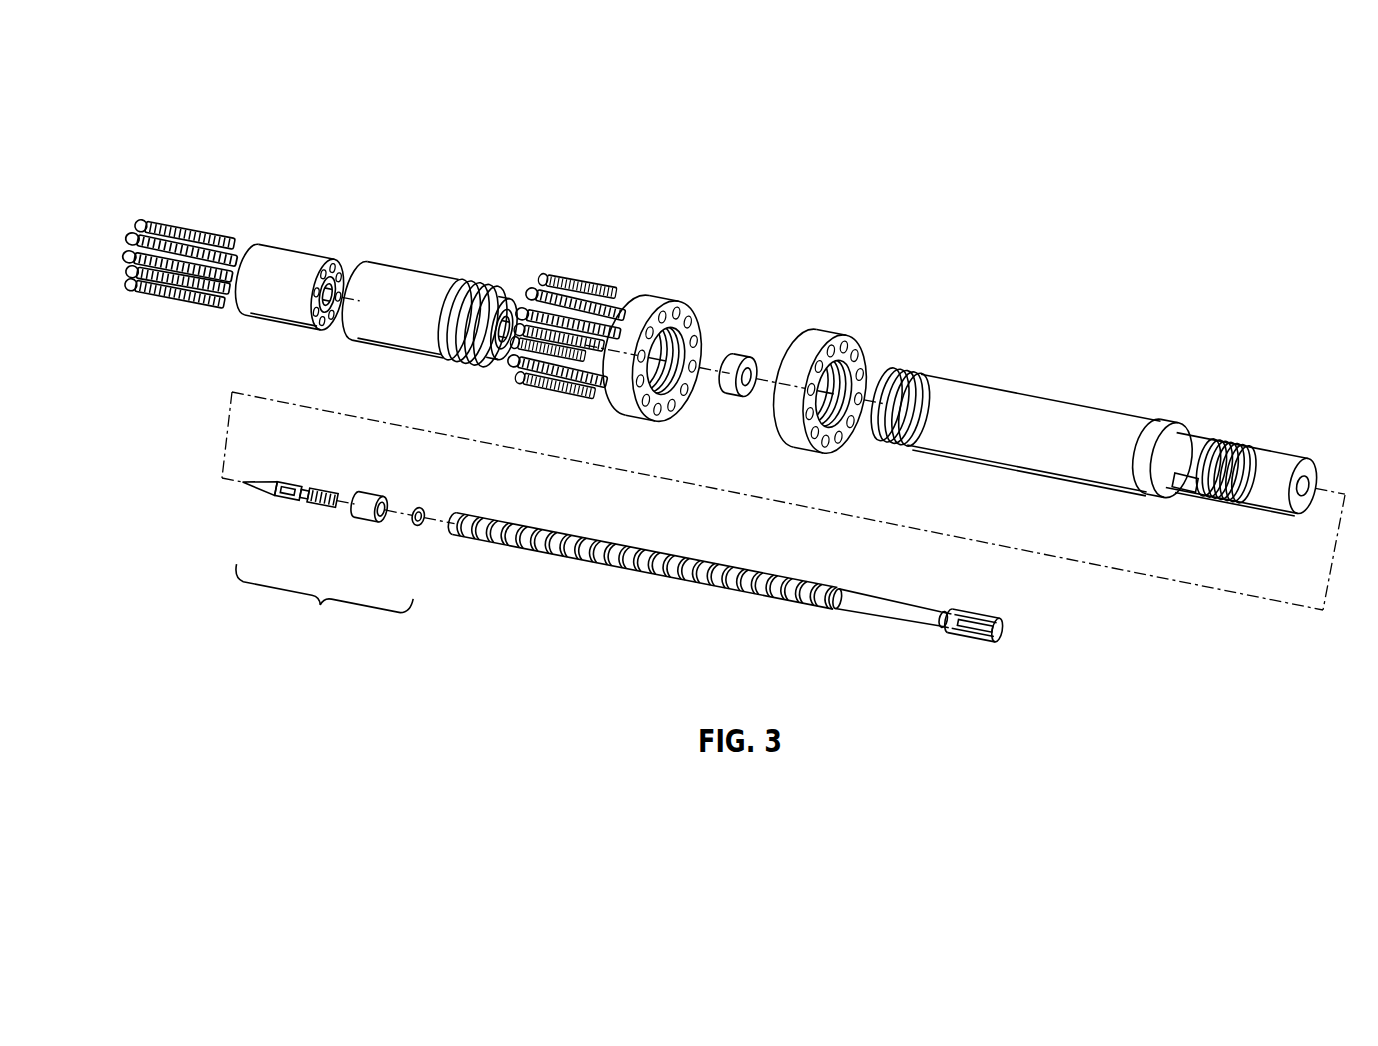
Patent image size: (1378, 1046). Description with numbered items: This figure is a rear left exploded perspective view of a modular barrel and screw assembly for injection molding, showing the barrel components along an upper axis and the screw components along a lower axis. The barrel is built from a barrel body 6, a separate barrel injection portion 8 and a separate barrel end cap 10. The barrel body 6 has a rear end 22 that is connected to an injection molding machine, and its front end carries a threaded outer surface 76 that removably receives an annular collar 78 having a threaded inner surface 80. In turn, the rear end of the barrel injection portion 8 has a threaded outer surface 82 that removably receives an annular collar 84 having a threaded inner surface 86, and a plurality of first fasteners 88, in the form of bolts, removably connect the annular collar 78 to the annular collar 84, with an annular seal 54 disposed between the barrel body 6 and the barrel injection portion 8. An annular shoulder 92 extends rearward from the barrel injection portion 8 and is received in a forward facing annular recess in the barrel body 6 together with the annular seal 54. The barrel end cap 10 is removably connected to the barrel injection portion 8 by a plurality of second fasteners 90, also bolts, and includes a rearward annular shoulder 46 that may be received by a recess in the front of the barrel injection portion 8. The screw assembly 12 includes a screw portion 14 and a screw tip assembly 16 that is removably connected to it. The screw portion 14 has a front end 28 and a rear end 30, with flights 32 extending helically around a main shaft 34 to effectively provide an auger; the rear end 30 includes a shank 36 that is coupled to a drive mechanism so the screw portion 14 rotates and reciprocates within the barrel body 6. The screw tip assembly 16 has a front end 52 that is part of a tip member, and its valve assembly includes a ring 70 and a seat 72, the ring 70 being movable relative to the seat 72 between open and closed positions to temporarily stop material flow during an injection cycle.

The barrel body 6 is at (1050, 410).
The barrel injection portion 8 is at (414, 285).
The barrel end cap 10 is at (290, 262).
The screw assembly 12 is at (1036, 633).
The screw portion 14 is at (612, 566).
The screw tip assembly 16 is at (322, 604).
The rear end 22 is at (1308, 486).
The front end 28 is at (455, 520).
The rear end 30 is at (995, 632).
The flights 32 is at (733, 592).
The main shaft 34 is at (796, 598).
The shank 36 is at (970, 630).
The rearward annular shoulder 46 is at (340, 290).
The front end 52 is at (268, 490).
The annular seal 54 is at (742, 362).
The ring 70 is at (360, 506).
The seat 72 is at (416, 524).
The outer surface 76 is at (908, 378).
The annular collar 78 is at (813, 340).
The threaded inner surface 80 is at (848, 386).
The outer surface 82 is at (490, 300).
The annular collar 84 is at (650, 308).
The threaded inner surface 86 is at (690, 348).
The first fasteners 88 is at (596, 300).
The second fasteners 90 is at (228, 246).
The annular shoulder 92 is at (502, 322).